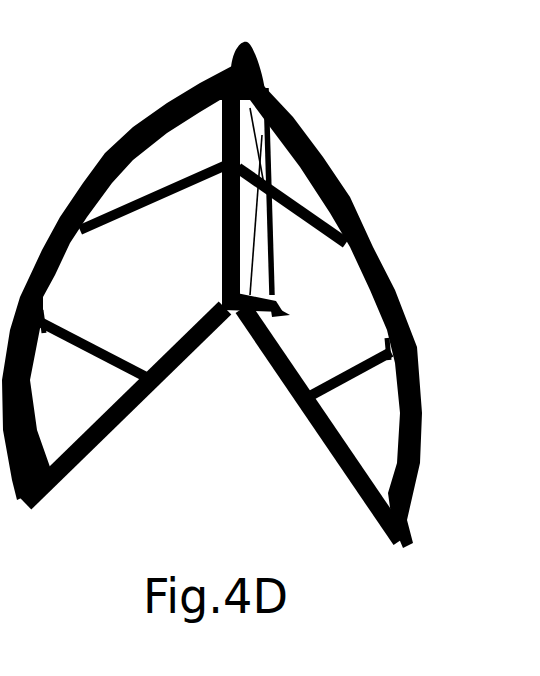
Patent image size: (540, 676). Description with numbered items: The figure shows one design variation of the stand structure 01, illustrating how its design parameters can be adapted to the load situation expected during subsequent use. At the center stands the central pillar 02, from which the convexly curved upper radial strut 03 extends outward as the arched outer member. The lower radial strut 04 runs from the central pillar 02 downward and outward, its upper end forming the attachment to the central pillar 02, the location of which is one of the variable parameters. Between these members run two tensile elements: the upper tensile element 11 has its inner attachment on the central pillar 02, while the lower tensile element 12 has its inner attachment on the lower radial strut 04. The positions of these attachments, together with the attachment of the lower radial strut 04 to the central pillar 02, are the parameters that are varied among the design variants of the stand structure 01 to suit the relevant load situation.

The stand structure 01 is at (212, 295).
The central pillar 02 is at (222, 258).
The upper radial strut 03 is at (362, 218).
The lower radial strut 04 is at (312, 430).
The upper tensile element 11 is at (118, 222).
The lower tensile element 12 is at (120, 362).